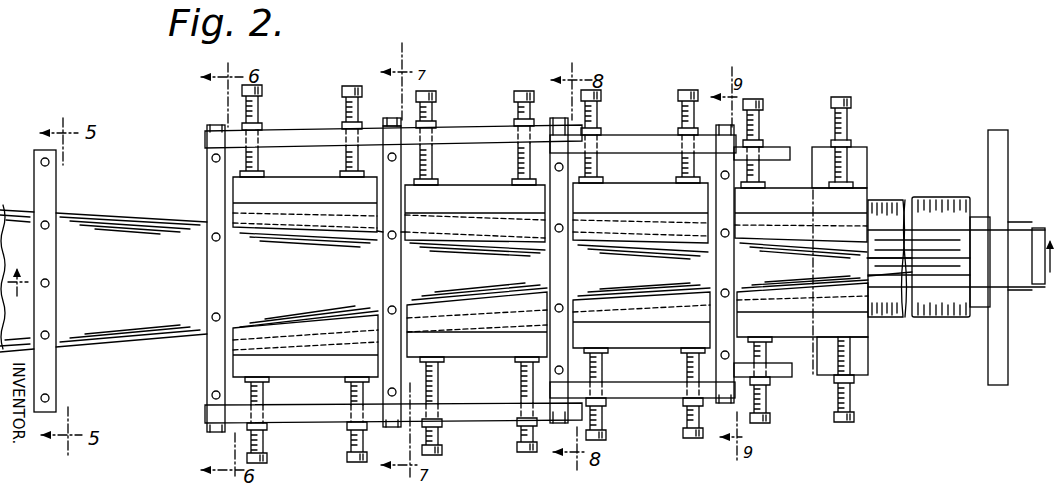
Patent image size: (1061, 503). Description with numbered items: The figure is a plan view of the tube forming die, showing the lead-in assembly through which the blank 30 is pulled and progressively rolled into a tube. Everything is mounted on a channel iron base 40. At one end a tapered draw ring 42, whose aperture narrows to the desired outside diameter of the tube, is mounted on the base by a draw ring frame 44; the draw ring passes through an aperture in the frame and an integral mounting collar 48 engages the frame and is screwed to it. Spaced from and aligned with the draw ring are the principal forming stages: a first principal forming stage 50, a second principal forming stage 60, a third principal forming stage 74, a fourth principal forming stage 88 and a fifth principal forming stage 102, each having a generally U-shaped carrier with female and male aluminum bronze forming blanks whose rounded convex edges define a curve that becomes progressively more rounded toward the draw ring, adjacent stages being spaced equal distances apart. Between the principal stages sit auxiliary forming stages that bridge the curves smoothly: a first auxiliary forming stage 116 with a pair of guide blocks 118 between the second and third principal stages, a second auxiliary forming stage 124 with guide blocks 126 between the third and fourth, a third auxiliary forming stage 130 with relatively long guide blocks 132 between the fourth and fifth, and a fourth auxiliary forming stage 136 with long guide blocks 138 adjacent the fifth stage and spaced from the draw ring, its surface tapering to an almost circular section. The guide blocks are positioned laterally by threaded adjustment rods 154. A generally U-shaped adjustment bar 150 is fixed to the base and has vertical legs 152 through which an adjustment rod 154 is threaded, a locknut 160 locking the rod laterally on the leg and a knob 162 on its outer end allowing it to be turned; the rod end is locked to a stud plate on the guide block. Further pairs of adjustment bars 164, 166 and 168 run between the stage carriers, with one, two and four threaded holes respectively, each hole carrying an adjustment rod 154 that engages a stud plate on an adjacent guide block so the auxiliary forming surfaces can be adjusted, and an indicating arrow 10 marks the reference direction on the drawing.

The apparatus 10 is at (527, 278).
The blank 30 is at (94, 222).
The channel iron base 40 is at (926, 198).
The tapered draw ring 42 is at (1025, 218).
The draw ring frame 44 is at (996, 137).
The mounting collar 48 is at (978, 215).
The first principal forming stage 50 is at (34, 150).
The second principal forming stage 60 is at (207, 162).
The third principal forming stage 74 is at (396, 114).
The fourth principal forming stage 88 is at (546, 168).
The fifth principal forming stage 102 is at (710, 172).
The first auxiliary forming stage 116 is at (227, 367).
The guide blocks 118 is at (292, 180).
The second auxiliary forming stage 124 is at (462, 358).
The guide blocks 126 is at (488, 236).
The third auxiliary forming stage 130 is at (632, 347).
The guide blocks 132 is at (629, 307).
The fourth auxiliary forming stage 136 is at (803, 342).
The guide blocks 138 is at (790, 230).
The adjustment bar 150 is at (876, 154).
The vertical legs 152 is at (870, 146).
The threaded adjustment rod 154 is at (755, 96).
The locknut 160 is at (832, 140).
The knob 162 is at (858, 148).
The adjustment bars 164 is at (776, 148).
The adjustment bars 166 is at (632, 138).
The adjustment bars 168 is at (465, 136).